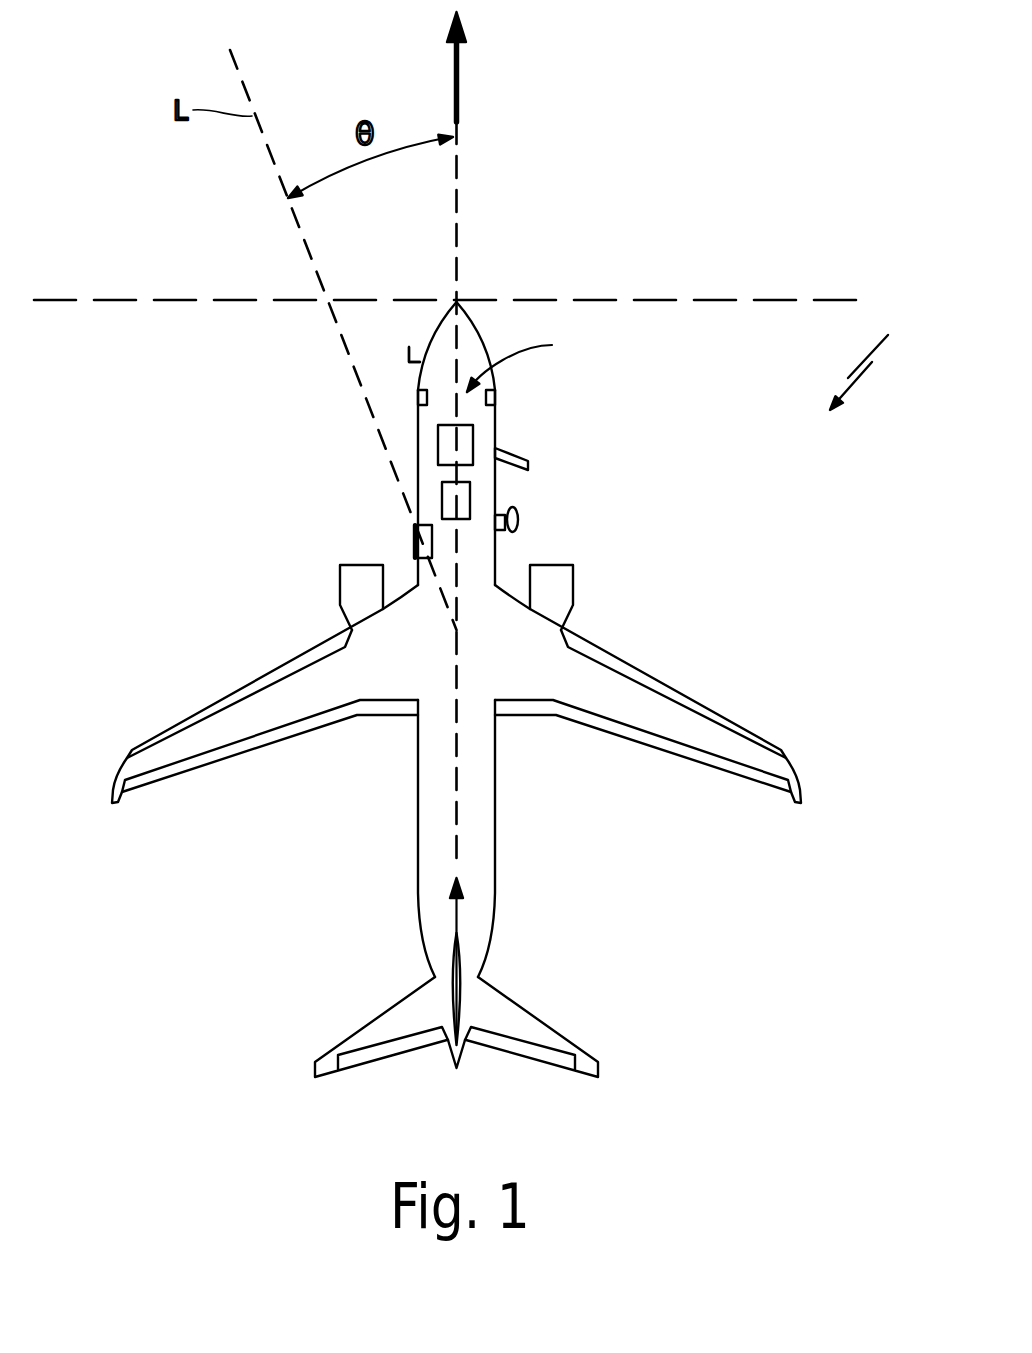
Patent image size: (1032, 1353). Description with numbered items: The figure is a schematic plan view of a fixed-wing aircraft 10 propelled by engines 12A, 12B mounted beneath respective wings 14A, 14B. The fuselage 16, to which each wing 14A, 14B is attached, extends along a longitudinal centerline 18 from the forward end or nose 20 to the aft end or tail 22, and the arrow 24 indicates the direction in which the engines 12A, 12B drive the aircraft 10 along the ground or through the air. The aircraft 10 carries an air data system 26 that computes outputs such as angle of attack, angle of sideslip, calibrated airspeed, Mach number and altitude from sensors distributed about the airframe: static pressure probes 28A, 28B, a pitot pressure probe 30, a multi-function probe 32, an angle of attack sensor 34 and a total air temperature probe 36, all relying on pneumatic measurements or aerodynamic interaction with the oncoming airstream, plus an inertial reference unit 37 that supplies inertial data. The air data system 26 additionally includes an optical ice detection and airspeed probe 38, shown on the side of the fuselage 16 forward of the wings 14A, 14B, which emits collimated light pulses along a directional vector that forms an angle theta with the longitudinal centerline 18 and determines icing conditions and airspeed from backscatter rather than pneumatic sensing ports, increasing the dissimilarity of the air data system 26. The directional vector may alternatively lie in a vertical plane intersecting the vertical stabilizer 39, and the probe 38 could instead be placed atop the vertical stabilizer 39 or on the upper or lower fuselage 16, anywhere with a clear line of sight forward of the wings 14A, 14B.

The aircraft 10 is at (875, 358).
The engine 12A is at (342, 571).
The engine 12B is at (562, 573).
The wing 14A is at (247, 713).
The wing 14B is at (667, 720).
The fuselage 16 is at (496, 755).
The longitudinal centerline 18 is at (457, 190).
The forward end (nose) 20 is at (460, 302).
The aft end (tail) 22 is at (456, 1068).
The arrow 24 is at (457, 73).
The air data system 26 is at (528, 361).
The static pressure probe 28A is at (418, 398).
The static pressure probe 28B is at (494, 398).
The pitot pressure probe 30 is at (423, 370).
The multi-function probe 32 is at (414, 354).
The angle of attack sensor 34 is at (528, 465).
The total air temperature probe 36 is at (520, 520).
The inertial reference unit 37 is at (446, 502).
The optical ice detection and airspeed probe 38 is at (432, 545).
The vertical stabilizer 39 is at (462, 983).